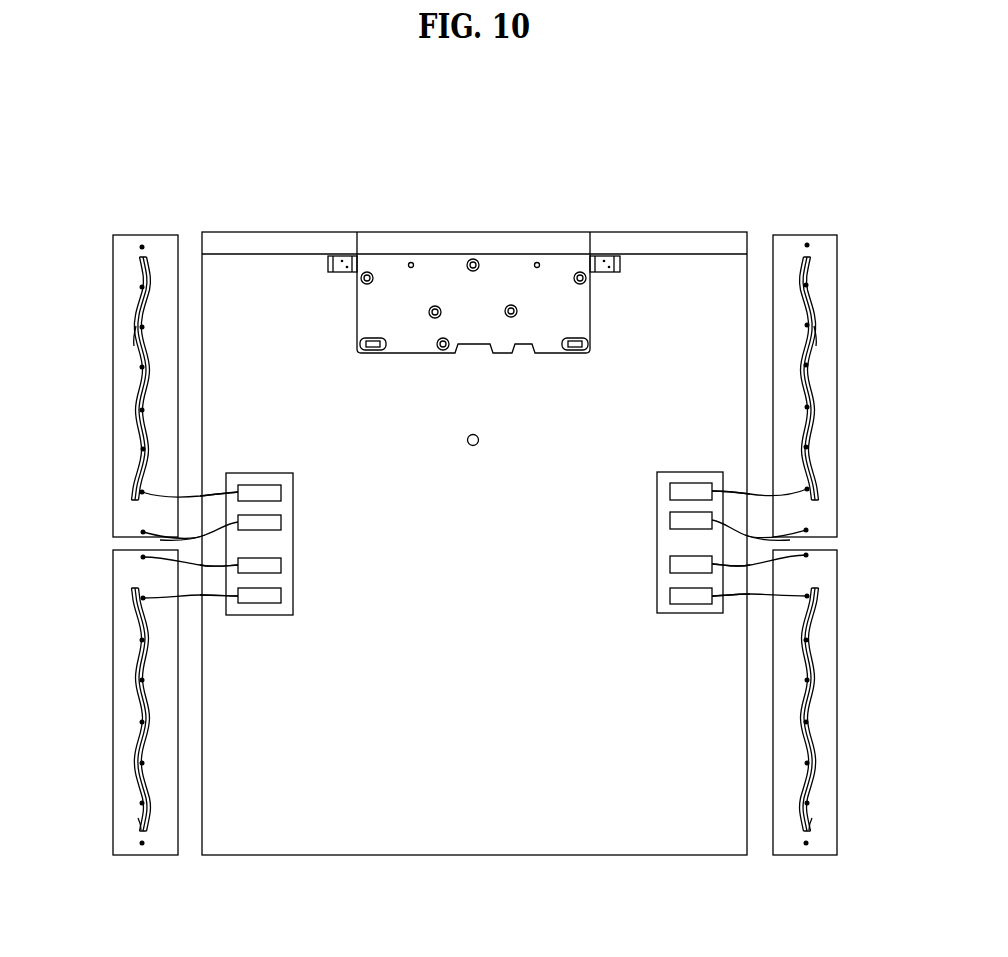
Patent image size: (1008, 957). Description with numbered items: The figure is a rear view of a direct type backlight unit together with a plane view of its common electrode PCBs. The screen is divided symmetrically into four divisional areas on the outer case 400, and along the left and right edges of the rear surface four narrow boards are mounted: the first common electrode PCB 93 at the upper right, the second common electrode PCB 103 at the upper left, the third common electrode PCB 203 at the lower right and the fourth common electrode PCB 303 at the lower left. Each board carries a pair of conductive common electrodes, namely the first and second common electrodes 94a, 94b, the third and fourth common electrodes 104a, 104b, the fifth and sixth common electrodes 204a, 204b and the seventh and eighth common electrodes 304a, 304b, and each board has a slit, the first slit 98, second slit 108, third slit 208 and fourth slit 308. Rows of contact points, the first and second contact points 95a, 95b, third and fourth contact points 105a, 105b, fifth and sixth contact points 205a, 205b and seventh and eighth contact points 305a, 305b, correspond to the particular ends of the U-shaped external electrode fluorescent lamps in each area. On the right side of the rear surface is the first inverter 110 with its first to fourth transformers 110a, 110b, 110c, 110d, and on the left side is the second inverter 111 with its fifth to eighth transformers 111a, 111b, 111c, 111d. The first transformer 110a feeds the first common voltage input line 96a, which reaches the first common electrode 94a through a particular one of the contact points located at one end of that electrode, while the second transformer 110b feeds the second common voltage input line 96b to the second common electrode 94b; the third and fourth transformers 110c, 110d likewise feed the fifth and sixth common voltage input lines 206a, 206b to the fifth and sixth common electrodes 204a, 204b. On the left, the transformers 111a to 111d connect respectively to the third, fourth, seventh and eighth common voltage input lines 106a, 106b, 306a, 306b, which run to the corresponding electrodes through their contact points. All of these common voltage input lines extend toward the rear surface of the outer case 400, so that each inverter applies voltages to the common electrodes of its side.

The outer case 400 is at (290, 233).
The second common electrode PCB 103 is at (152, 233).
The third common electrode 104a is at (142, 262).
The fourth common electrode 104b is at (136, 326).
The third contact points 105a is at (142, 247).
The fourth contact points 105b is at (142, 287).
The second slit 108 is at (142, 410).
The second inverter 111 is at (281, 473).
The fifth transformer 111a is at (281, 490).
The sixth transformer 111b is at (281, 521).
The seventh transformer 111c is at (281, 566).
The eighth transformer 111d is at (281, 596).
The third common voltage input line 106a is at (211, 492).
The fourth common voltage input line 106b is at (180, 540).
The seventh common voltage input line 306a is at (216, 564).
The eighth common voltage input line 306b is at (215, 598).
The fourth common electrode PCB 303 is at (152, 856).
The seventh common electrode 304a is at (136, 767).
The eighth common electrode 304b is at (139, 826).
The seventh contact points 305a is at (142, 803).
The eighth contact points 305b is at (142, 843).
The fourth slit 308 is at (142, 680).
The first common electrode PCB 93 is at (797, 233).
The first common electrode 94a is at (808, 262).
The second common electrode 94b is at (814, 325).
The first contact points 95a is at (807, 245).
The second contact points 95b is at (806, 285).
The first slit 98 is at (807, 407).
The first inverter 110 is at (665, 472).
The first transformer 110a is at (670, 491).
The second transformer 110b is at (670, 520).
The third transformer 110c is at (670, 564).
The fourth transformer 110d is at (670, 596).
The first common voltage input line 96a is at (743, 492).
The second common voltage input line 96b is at (772, 538).
The fifth common voltage input line 206a is at (735, 564).
The sixth common voltage input line 206b is at (735, 598).
The third common electrode PCB 203 is at (797, 856).
The fifth common electrode 204a is at (814, 767).
The sixth common electrode 204b is at (811, 826).
The fifth contact points 205a is at (807, 803).
The sixth contact points 205b is at (806, 843).
The third slit 208 is at (807, 680).